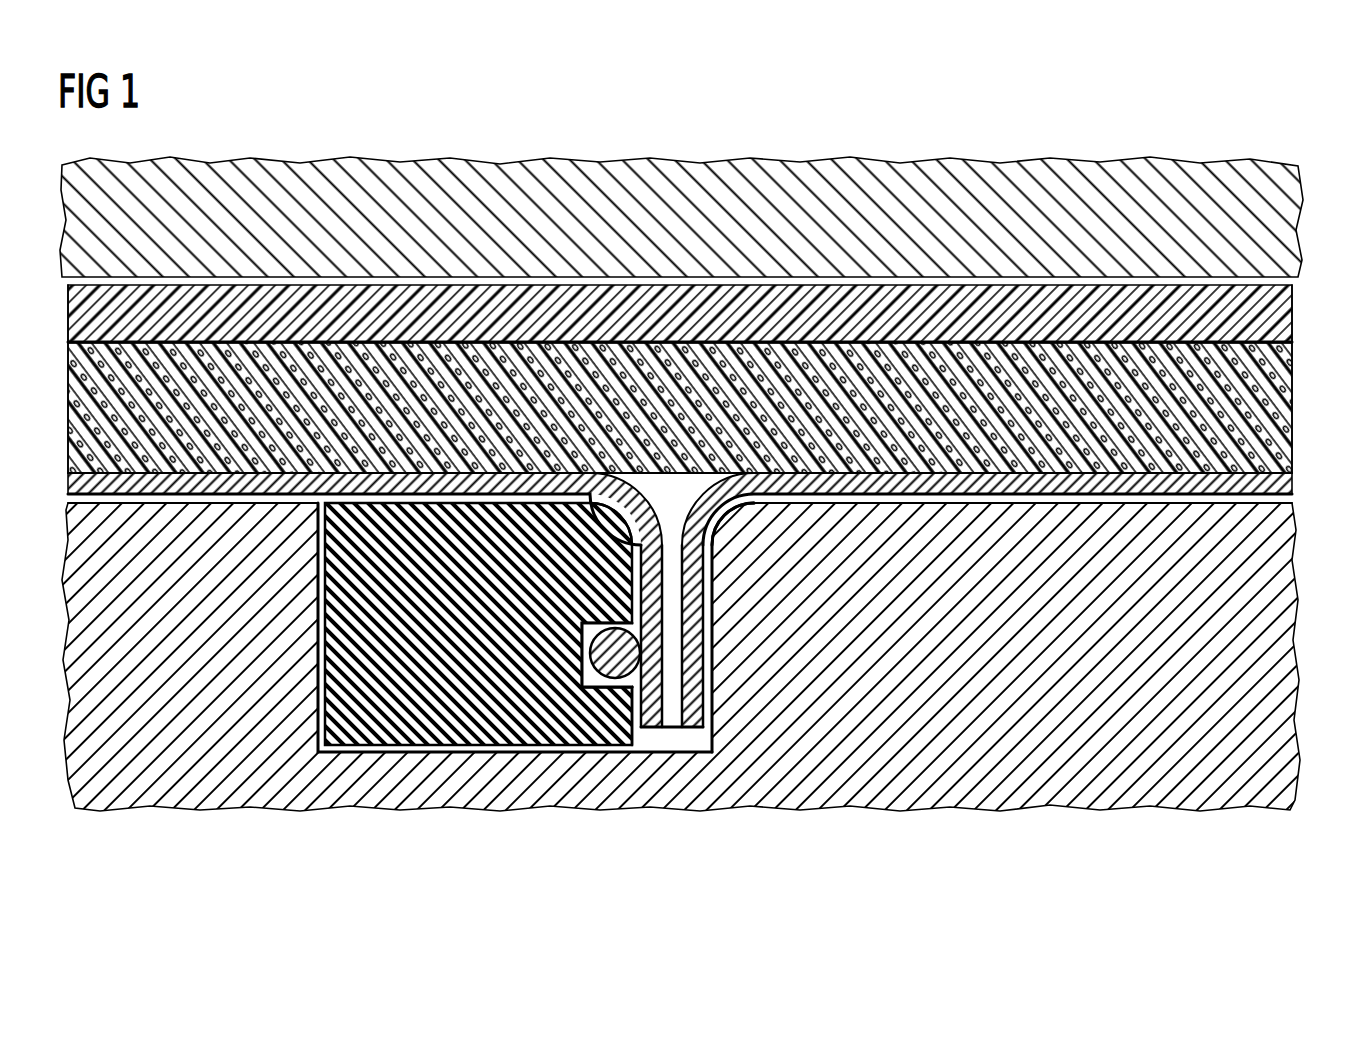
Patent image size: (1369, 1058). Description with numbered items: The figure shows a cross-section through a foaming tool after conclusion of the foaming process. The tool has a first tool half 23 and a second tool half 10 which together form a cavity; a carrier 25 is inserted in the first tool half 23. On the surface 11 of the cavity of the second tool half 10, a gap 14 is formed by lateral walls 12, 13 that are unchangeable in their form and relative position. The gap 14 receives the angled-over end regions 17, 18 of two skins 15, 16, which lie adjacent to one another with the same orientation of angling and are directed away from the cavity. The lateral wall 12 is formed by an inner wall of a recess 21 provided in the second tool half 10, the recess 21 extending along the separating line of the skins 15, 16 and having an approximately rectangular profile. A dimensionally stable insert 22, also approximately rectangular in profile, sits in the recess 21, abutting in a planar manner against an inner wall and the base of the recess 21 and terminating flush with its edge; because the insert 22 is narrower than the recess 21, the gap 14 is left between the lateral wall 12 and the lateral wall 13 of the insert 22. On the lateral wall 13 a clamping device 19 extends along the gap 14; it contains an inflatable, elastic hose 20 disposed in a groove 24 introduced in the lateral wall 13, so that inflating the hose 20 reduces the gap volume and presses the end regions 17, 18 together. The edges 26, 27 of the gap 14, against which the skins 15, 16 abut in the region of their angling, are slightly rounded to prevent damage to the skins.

The second tool half 10 is at (1050, 795).
The surface of the cavity 11 is at (1275, 503).
The lateral wall 12 is at (716, 723).
The lateral wall 13 is at (630, 717).
The gap 14 is at (673, 535).
The skin 15 is at (177, 480).
The skin 16 is at (985, 483).
The angled-over end region 17 is at (655, 638).
The angled-over end region 18 is at (684, 640).
The clamping device 19 is at (582, 677).
The inflatable, elastic hose 20 is at (602, 648).
The recess 21 is at (317, 690).
The dimensionally stable insert 22 is at (437, 730).
The first tool half 23 is at (1063, 172).
The groove 24 is at (603, 700).
The carrier 25 is at (1287, 313).
The edge of the gap 26 is at (620, 513).
The edge of the gap 27 is at (720, 518).